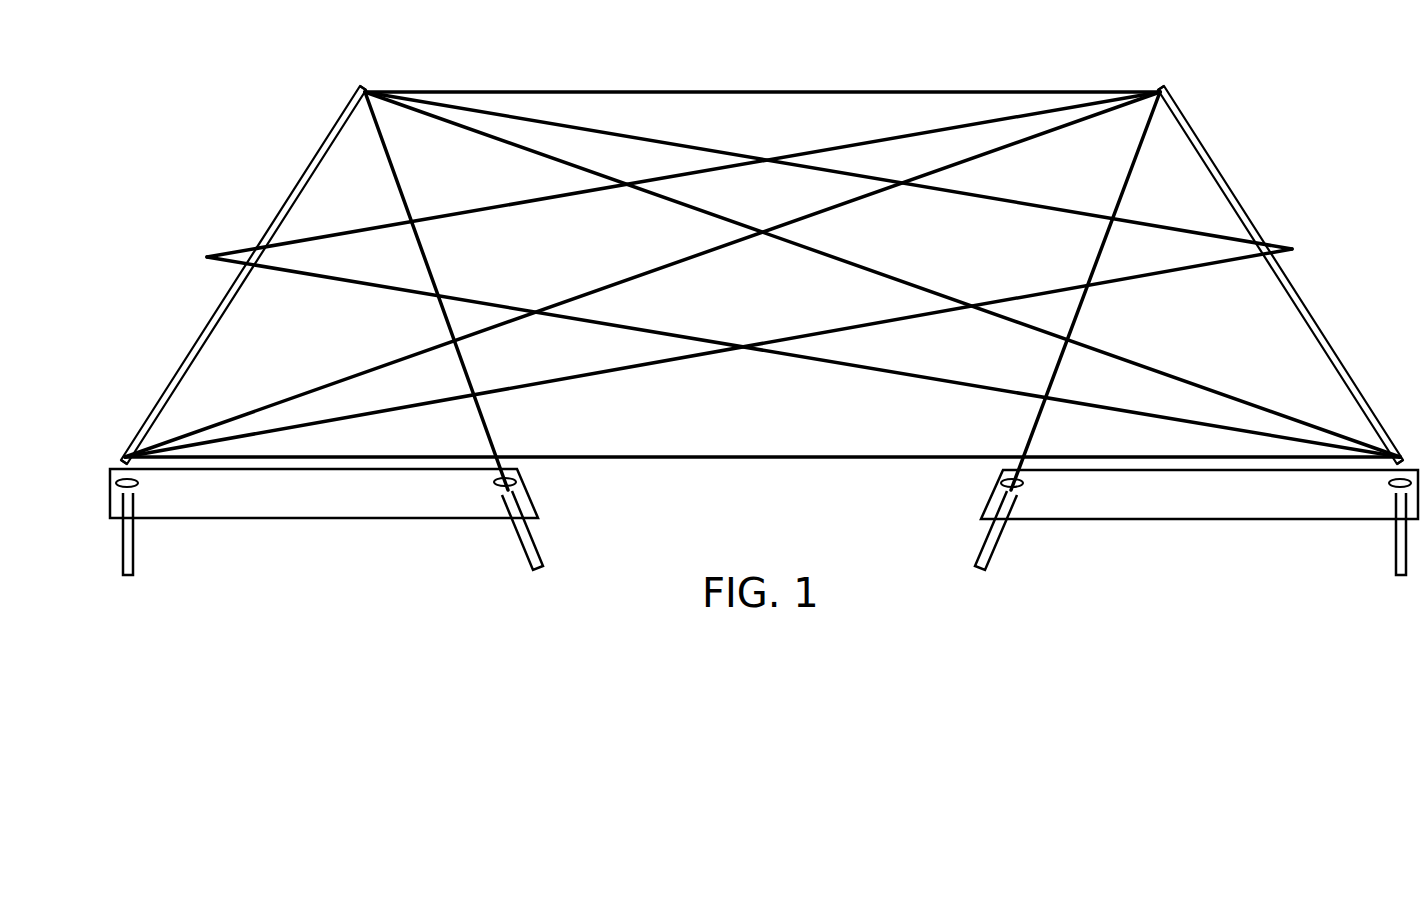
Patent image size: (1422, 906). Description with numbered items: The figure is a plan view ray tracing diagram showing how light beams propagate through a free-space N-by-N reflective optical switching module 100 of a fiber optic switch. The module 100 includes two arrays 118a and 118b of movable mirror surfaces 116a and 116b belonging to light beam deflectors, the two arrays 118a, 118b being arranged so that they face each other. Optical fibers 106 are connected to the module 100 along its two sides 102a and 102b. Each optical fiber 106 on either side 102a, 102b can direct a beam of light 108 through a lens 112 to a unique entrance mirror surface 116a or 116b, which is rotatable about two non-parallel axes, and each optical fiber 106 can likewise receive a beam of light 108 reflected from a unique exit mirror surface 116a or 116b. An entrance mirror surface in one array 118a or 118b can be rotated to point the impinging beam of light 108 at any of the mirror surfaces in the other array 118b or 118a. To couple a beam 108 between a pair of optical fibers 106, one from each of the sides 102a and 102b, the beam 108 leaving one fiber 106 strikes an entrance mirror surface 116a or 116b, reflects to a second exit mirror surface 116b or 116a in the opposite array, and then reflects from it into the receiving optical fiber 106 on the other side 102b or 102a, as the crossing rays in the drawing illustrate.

The optical switching module 100 is at (779, 509).
The side 102a is at (267, 508).
The side 102b is at (1203, 505).
The optical fiber 106 is at (135, 553).
The beam of light 108 is at (481, 215).
The lens 112 is at (137, 483).
The mirror surface 116a is at (372, 97).
The mirror surface 116b is at (1152, 97).
The array 118a is at (193, 347).
The array 118b is at (1347, 320).